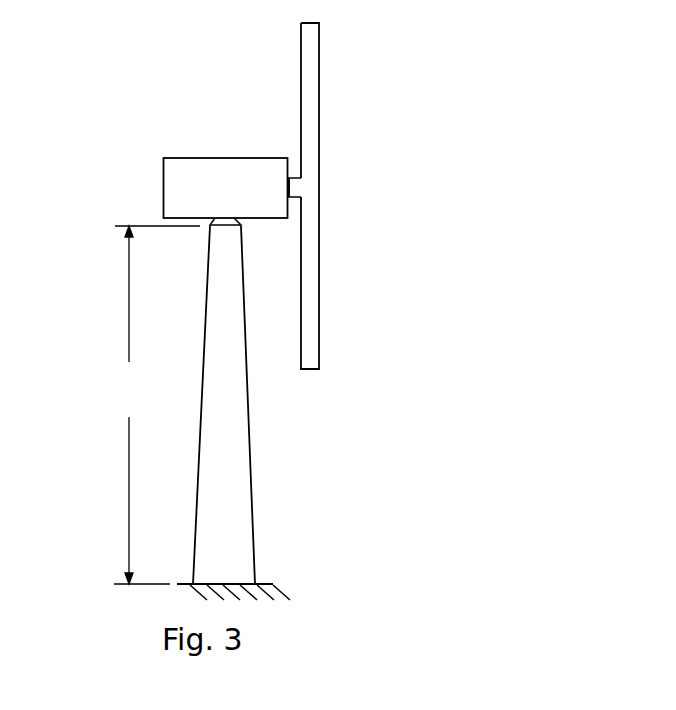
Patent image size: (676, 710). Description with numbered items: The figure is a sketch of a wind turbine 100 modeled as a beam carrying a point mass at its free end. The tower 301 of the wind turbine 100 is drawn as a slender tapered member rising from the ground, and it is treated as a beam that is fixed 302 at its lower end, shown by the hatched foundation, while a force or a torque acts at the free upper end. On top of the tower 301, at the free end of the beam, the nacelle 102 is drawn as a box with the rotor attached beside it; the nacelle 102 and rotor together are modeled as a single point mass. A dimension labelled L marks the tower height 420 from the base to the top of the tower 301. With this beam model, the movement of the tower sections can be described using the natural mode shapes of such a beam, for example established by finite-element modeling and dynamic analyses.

The wind turbine 100 is at (378, 100).
The nacelle 102 is at (202, 183).
The tower 301 is at (245, 513).
The fixed end 302 is at (273, 568).
The tower height 420 is at (126, 405).